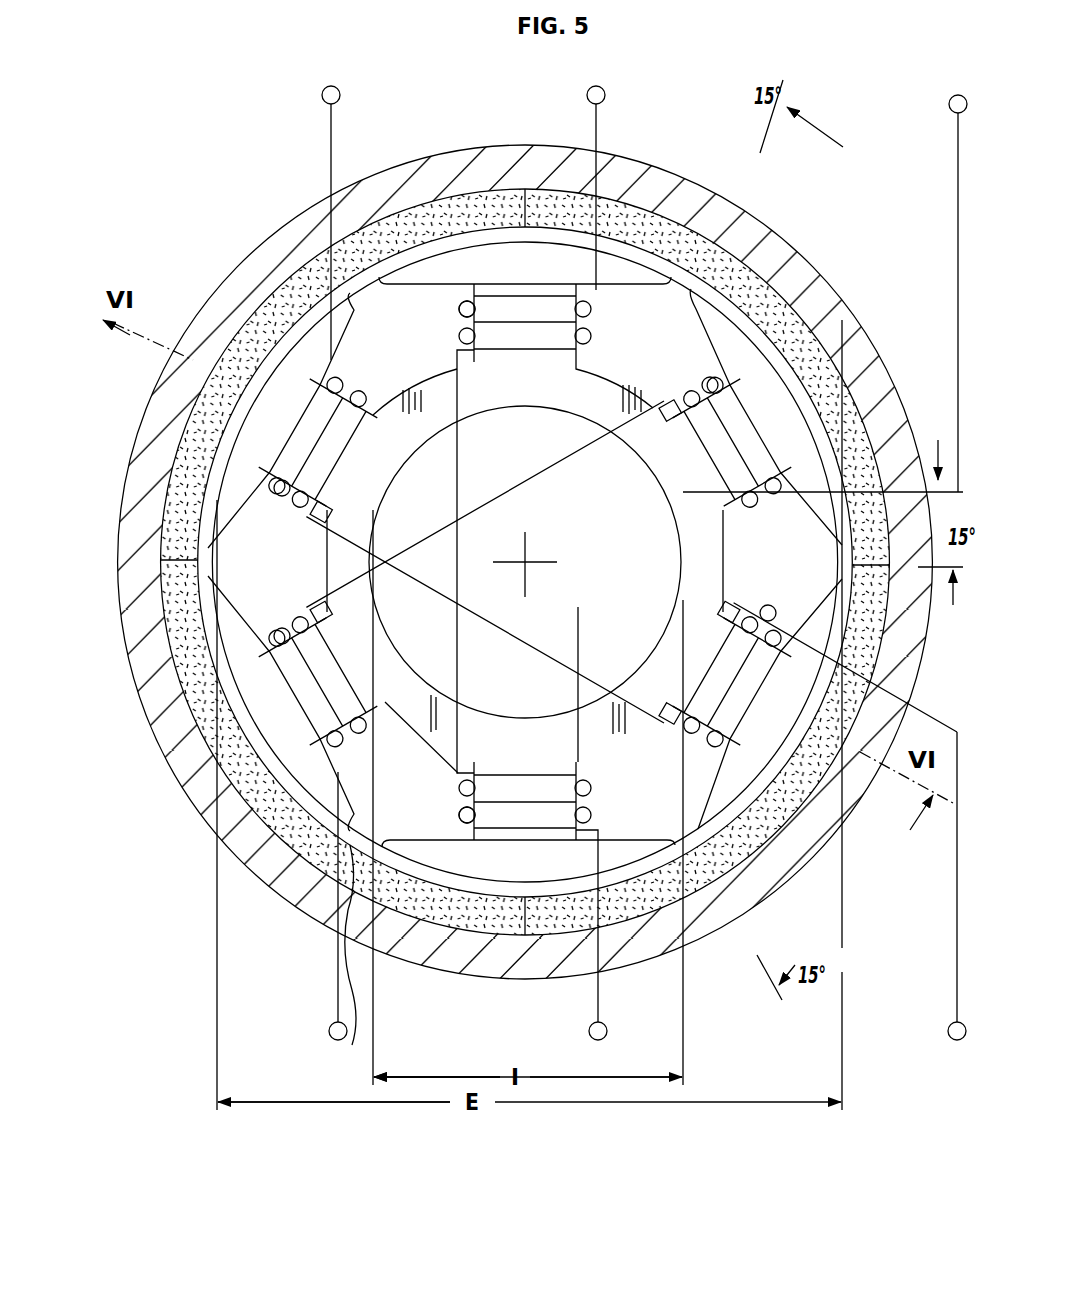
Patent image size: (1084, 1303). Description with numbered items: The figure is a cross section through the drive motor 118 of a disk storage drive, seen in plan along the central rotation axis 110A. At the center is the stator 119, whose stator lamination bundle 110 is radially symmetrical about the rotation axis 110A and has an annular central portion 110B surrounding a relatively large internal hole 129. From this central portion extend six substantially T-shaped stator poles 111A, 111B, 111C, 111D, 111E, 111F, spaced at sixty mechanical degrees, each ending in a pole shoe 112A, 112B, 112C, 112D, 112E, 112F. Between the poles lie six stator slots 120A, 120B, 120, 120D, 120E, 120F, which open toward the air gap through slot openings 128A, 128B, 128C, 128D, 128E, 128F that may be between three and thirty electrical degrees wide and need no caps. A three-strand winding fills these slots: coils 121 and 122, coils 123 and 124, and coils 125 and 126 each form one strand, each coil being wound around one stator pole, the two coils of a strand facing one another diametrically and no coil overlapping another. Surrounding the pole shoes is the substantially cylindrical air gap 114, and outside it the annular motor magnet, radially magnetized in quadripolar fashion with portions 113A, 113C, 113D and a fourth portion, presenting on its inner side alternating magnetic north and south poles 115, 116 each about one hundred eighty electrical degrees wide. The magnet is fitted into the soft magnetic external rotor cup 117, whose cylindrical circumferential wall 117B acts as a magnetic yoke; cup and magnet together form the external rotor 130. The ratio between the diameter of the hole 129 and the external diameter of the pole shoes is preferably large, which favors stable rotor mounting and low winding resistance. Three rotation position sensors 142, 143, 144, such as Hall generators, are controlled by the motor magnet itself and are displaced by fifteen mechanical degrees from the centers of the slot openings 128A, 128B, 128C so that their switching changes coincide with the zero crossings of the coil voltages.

The stator lamination bundle 110 is at (525, 562).
The central rotation axis 110A is at (552, 575).
The annular central portion 110B is at (631, 566).
The stator pole 111A is at (429, 309).
The stator pole 111B is at (692, 362).
The stator pole 111C is at (784, 601).
The stator pole 111D is at (436, 799).
The stator pole 111E is at (270, 614).
The stator pole 111F is at (270, 510).
The pole shoe 112A is at (525, 188).
The pole shoe 112B is at (868, 293).
The pole shoe 112C is at (861, 840).
The pole shoe 112D is at (510, 944).
The pole shoe 112E is at (141, 679).
The pole shoe 112F is at (131, 394).
The motor magnet portion 113A is at (525, 562).
The motor magnet portion 113C is at (525, 574).
The motor magnet portion 113D is at (524, 526).
The air gap 114 is at (180, 762).
The magnetic north pole 115 is at (748, 258).
The magnetic south pole 116 is at (528, 557).
The external rotor cup 117 is at (640, 55).
The cylindrical circumferential wall 117B is at (190, 797).
The drive motor 118 is at (525, 562).
The stator 119 is at (517, 704).
The stator slot 120 is at (617, 814).
The stator slot 120A is at (719, 450).
The stator slot 120B is at (750, 672).
The stator slot 120D is at (384, 716).
The stator slot 120E is at (281, 472).
The stator slot 120F is at (420, 557).
The coil 121 is at (552, 323).
The coil 122 is at (525, 782).
The coil 123 is at (719, 442).
The coil 124 is at (318, 674).
The coil 125 is at (732, 658).
The coil 126 is at (320, 442).
The slot opening 128A is at (525, 542).
The slot opening 128B is at (926, 622).
The slot opening 128C is at (777, 925).
The slot opening 128D is at (441, 943).
The slot opening 128E is at (122, 488).
The slot opening 128F is at (372, 171).
The hole 129 is at (513, 410).
The external rotor 130 is at (140, 462).
The rotation position sensor 142 is at (672, 215).
The rotation position sensor 143 is at (866, 467).
The rotation position sensor 144 is at (825, 872).